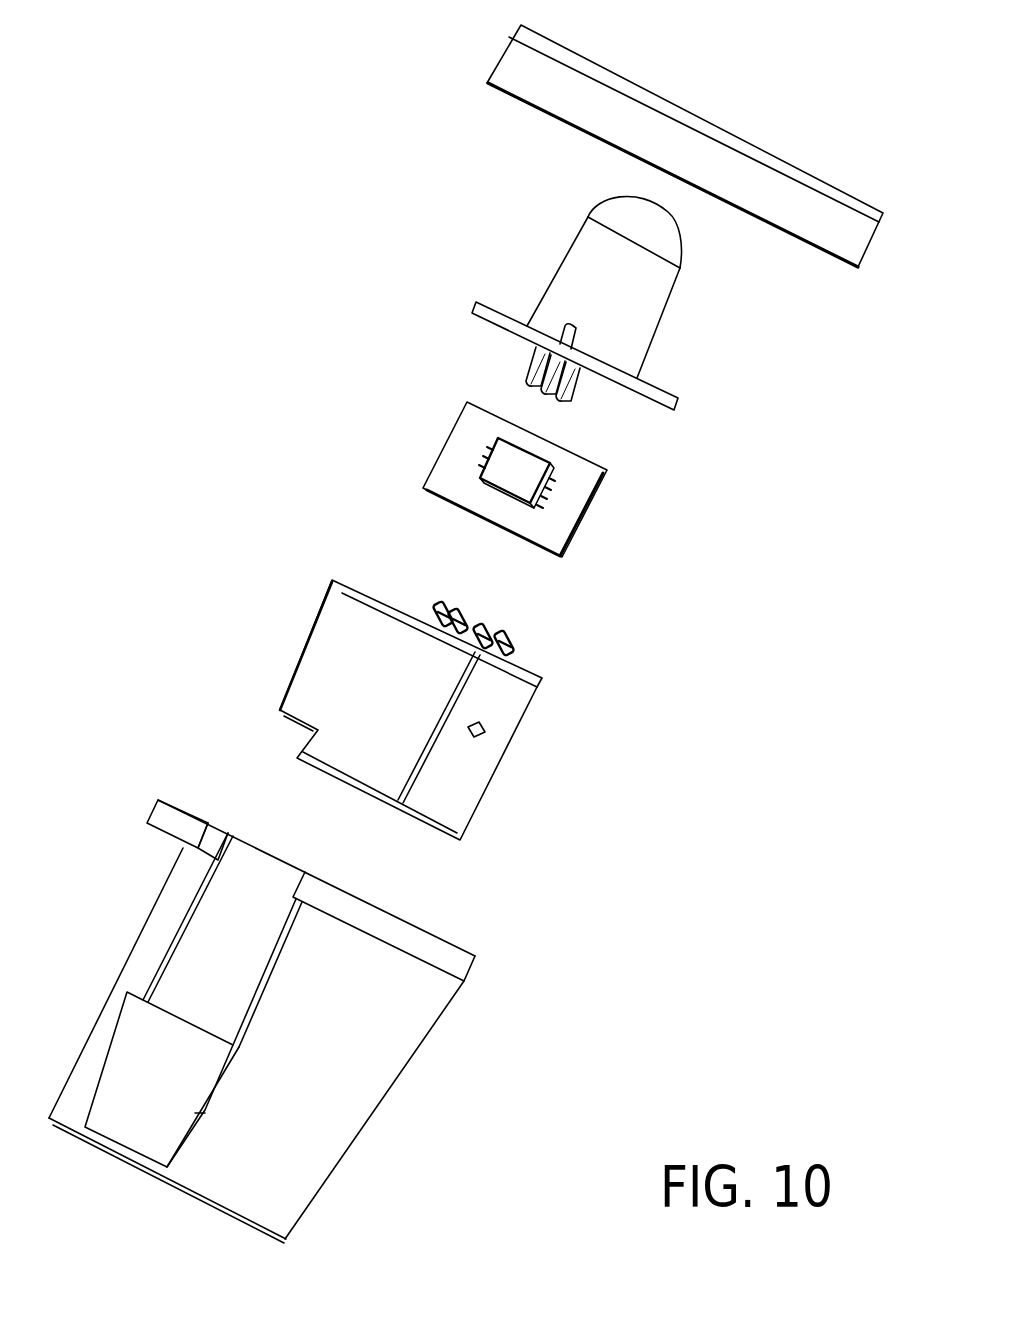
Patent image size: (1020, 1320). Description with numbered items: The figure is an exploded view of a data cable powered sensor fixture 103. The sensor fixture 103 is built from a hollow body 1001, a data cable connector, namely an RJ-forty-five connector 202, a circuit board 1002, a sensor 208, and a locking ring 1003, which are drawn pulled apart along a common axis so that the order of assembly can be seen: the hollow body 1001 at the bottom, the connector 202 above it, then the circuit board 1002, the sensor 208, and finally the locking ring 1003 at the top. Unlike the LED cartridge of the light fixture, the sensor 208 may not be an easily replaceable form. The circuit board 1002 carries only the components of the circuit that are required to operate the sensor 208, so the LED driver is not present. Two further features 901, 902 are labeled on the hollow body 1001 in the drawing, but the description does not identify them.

The sensor fixture 103 is at (235, 88).
The locking ring 1003 is at (773, 225).
The sensor 208 is at (677, 407).
The circuit board 1002 is at (583, 518).
The RJ-45 connector 202 is at (498, 770).
The hollow body 1001 is at (358, 1098).
The tab 901 is at (158, 833).
The wedge latch 902 is at (128, 1127).